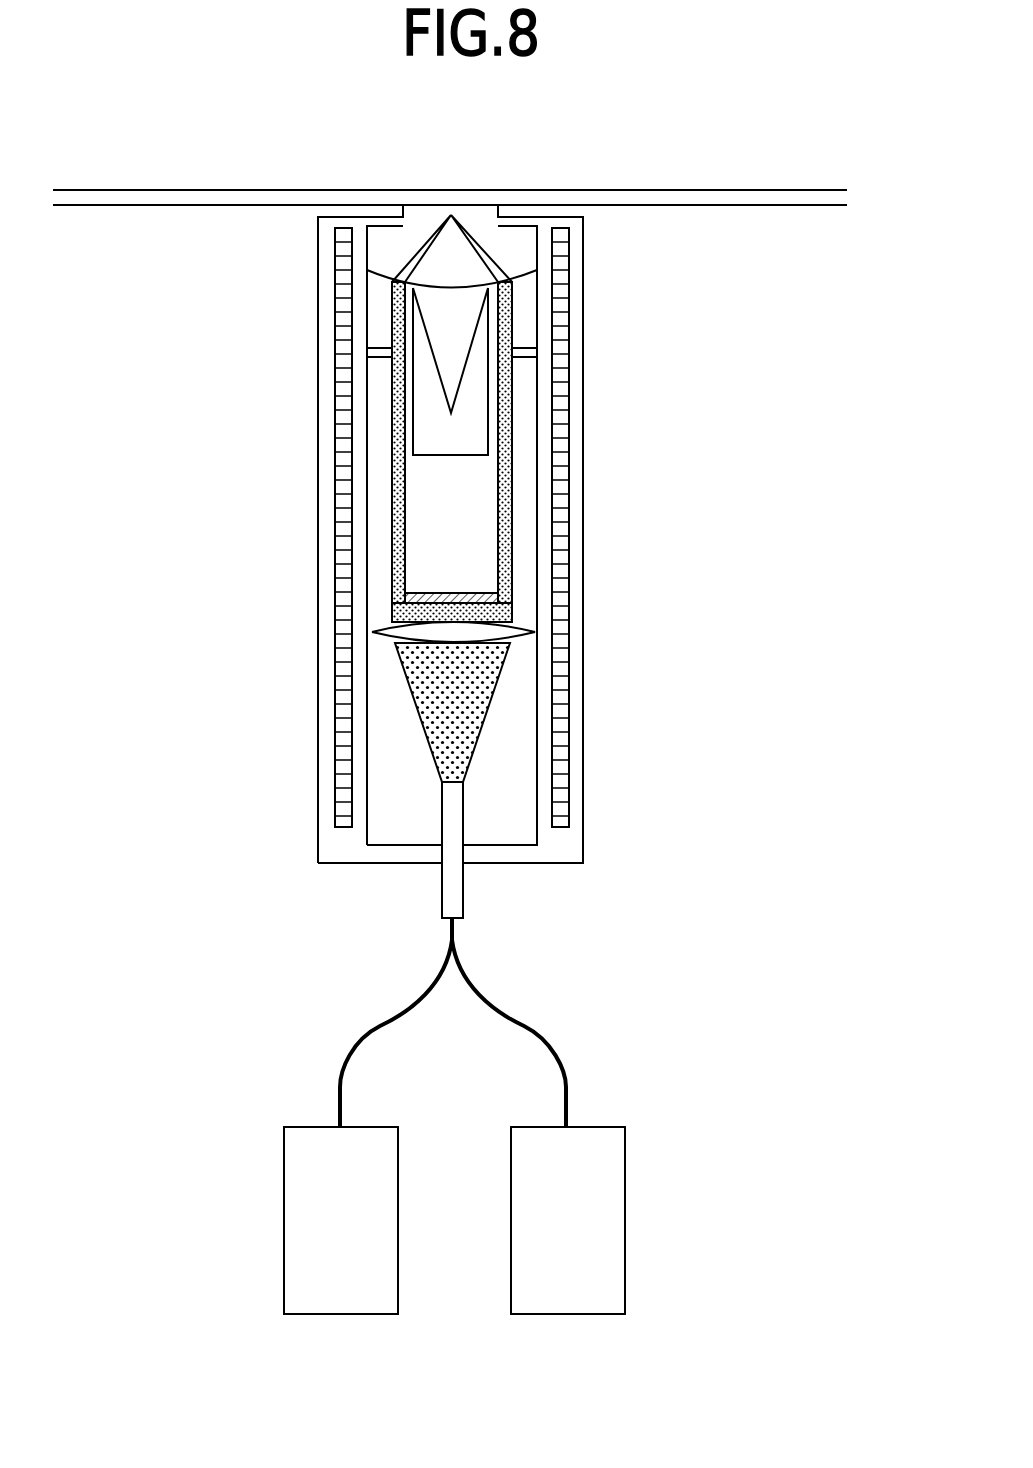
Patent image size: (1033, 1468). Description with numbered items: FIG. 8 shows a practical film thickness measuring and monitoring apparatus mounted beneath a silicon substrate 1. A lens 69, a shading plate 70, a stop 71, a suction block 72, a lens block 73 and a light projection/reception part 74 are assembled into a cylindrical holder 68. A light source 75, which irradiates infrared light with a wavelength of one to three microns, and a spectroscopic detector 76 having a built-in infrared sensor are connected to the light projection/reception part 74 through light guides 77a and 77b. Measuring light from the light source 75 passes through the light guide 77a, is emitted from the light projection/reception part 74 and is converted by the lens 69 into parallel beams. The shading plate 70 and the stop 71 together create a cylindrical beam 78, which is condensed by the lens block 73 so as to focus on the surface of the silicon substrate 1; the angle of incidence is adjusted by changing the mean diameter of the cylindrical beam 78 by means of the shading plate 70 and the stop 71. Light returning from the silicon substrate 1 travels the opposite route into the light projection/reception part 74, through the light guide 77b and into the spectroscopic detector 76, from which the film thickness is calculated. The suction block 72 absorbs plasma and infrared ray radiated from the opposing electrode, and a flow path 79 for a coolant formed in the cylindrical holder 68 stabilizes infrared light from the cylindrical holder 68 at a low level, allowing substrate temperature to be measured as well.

The silicon substrate 1 is at (676, 190).
The cylindrical holder 68 is at (585, 513).
The lens 69 is at (373, 630).
The shading plate 70 is at (447, 593).
The stop 71 is at (375, 352).
The suction block 72 is at (428, 414).
The lens block 73 is at (383, 248).
The light projection/reception part 74 is at (441, 906).
The light source 75 is at (625, 1218).
The spectroscopic detector 76 is at (284, 1224).
The light guide 77a is at (548, 1038).
The light guide 77b is at (360, 1037).
The cylindrical beam 78 is at (510, 403).
The flow path of a coolant 79 is at (565, 612).